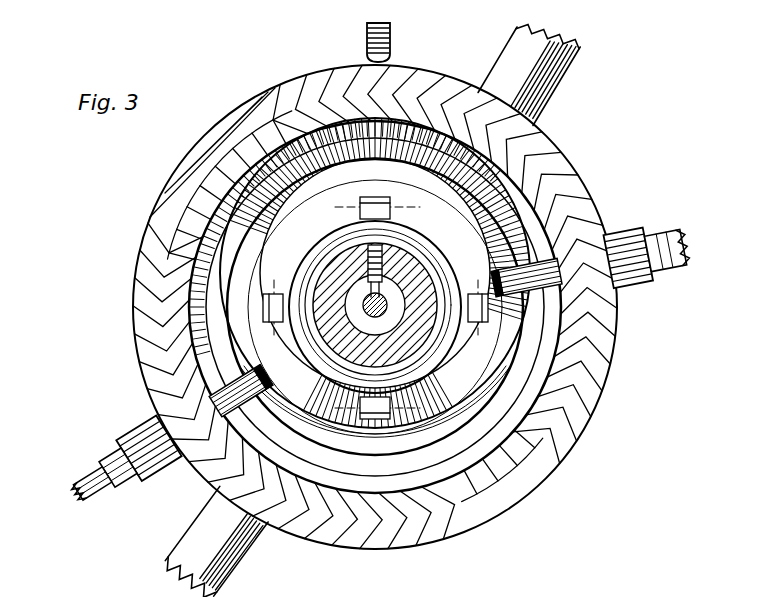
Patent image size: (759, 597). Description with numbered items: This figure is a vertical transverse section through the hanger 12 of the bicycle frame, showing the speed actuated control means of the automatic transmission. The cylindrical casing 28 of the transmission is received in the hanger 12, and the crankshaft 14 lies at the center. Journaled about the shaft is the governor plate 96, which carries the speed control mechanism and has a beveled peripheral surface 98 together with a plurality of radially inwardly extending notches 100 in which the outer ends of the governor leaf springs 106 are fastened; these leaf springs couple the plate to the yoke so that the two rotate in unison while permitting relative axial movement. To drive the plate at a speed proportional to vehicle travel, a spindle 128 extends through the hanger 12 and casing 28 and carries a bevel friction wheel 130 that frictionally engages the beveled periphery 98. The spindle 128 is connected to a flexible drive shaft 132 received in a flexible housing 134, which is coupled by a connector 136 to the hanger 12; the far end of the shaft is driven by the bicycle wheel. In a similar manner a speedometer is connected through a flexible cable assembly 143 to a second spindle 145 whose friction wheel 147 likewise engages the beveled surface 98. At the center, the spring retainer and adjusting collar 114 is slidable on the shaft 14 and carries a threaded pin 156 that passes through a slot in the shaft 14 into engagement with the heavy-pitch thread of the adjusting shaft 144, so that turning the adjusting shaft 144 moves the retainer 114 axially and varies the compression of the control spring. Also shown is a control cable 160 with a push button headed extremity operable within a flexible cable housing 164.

The hanger 12 is at (550, 152).
The crankshaft 14 is at (392, 312).
The casing 28 is at (562, 385).
The plate 96 is at (278, 243).
The beveled peripheral surface 98 is at (288, 414).
The notches 100 is at (273, 296).
The governor leaf springs 106 is at (376, 198).
The spring retainer and adjusting collar 114 is at (413, 277).
The spindle 128 is at (222, 387).
The bevel friction wheel 130 is at (250, 372).
The flexible drive shaft 132 is at (95, 472).
The flexible housing 134 is at (110, 450).
The connector 136 is at (140, 420).
The flexible cable assembly 143 is at (656, 258).
The adjusting shaft 144 is at (352, 368).
The spindle 145 is at (541, 268).
The friction wheel 147 is at (505, 328).
The threaded pin 156 is at (382, 262).
The control cable 160 is at (393, 48).
The flexible cable housing 164 is at (368, 38).